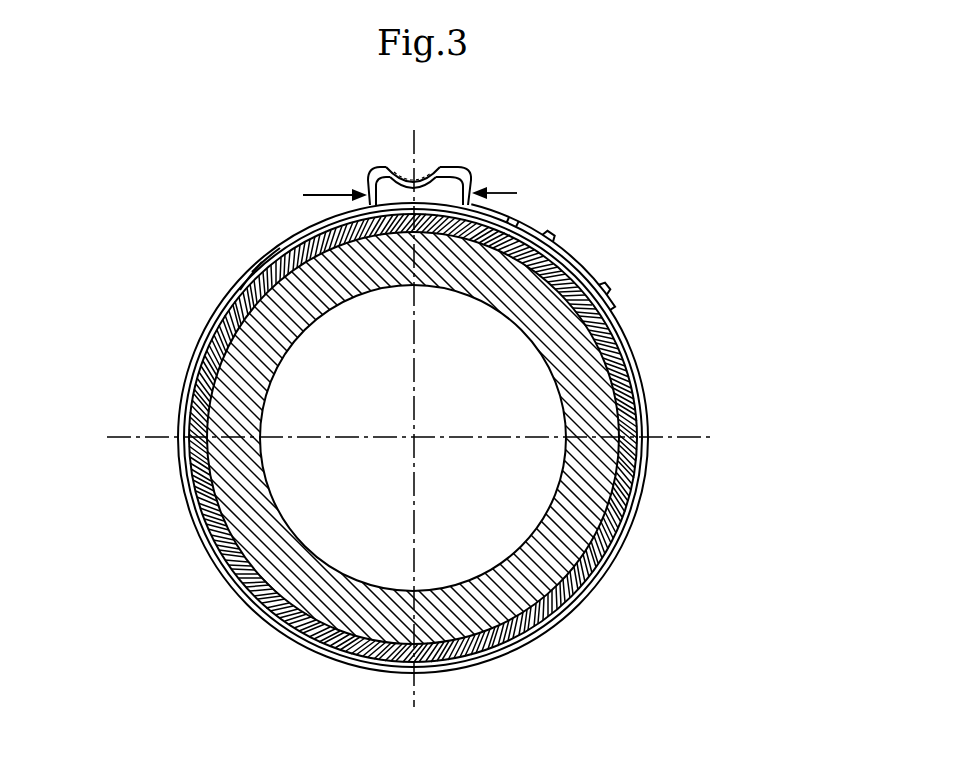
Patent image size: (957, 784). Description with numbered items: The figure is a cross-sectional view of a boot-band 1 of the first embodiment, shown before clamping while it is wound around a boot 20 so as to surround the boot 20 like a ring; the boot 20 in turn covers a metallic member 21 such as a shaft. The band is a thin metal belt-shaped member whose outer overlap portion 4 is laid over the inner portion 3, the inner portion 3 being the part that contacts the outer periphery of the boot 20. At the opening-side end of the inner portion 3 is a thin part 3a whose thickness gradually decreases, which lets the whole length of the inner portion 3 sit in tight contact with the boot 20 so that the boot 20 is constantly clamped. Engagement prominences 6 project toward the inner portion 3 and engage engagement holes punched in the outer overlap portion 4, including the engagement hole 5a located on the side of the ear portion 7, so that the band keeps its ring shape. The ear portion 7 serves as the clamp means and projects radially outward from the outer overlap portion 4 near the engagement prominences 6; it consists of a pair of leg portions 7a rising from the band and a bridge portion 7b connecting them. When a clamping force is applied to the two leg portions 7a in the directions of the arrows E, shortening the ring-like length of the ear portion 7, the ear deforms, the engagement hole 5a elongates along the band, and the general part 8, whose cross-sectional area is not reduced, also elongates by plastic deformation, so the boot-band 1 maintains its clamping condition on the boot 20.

The boot-band 1 is at (178, 320).
The inner portion 3 is at (502, 232).
The thin part 3a is at (245, 283).
The outer overlap portion 4 is at (593, 278).
The engagement hole 5a is at (521, 216).
The engagement prominences 6 is at (553, 230).
The ear portion 7 is at (423, 143).
The leg portions 7a is at (368, 180).
The bridge portion 7b is at (410, 168).
The general part 8 is at (263, 255).
The boot 20 is at (632, 377).
The metallic member 21 is at (585, 547).